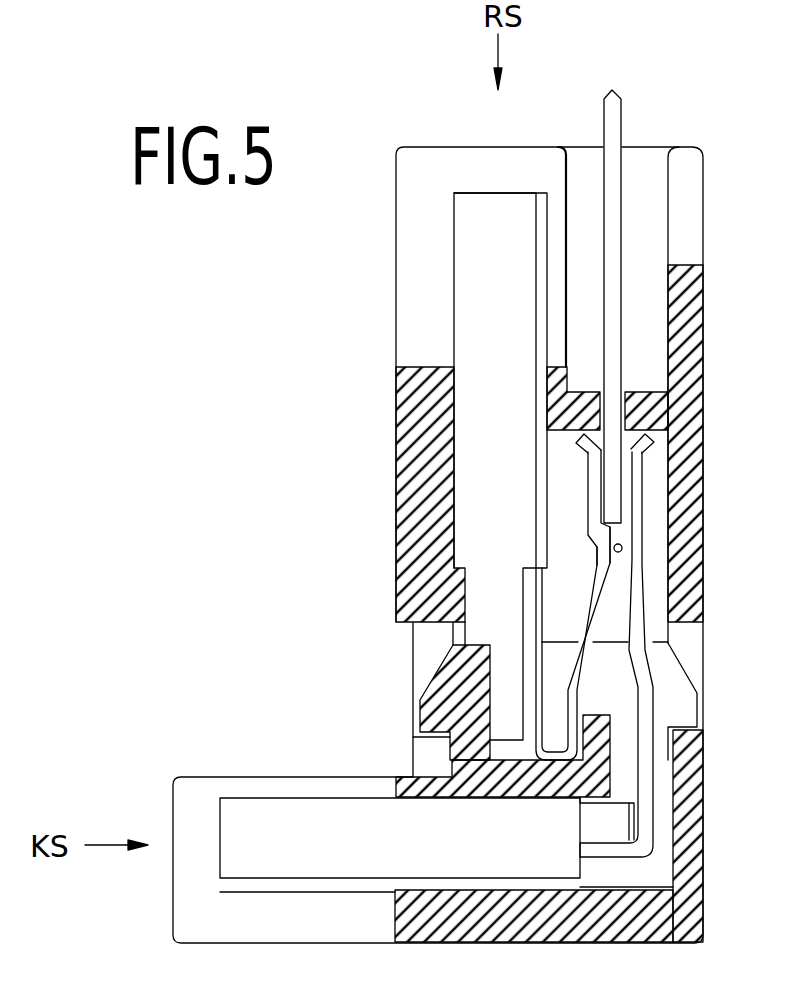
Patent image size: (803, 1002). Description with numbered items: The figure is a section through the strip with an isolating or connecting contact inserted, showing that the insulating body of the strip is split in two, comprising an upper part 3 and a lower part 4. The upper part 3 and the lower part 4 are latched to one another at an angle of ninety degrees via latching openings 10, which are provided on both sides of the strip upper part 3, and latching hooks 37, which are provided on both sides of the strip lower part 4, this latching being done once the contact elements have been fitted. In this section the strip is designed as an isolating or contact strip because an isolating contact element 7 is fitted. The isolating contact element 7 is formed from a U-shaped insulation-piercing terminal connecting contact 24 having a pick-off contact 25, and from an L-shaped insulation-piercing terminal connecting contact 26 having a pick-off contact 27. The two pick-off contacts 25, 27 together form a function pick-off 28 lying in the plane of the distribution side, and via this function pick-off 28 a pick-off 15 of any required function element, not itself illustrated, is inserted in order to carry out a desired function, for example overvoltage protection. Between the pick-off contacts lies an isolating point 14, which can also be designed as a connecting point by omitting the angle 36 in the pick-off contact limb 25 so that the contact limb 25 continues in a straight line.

The upper part 3 is at (395, 565).
The lower part 4 is at (690, 841).
The isolating contact element 7 is at (658, 680).
The latching openings 10 is at (423, 650).
The isolating point 14 is at (622, 547).
The pick-off 15 is at (618, 368).
The U-shaped insulation-piercing terminal connecting contact 24 is at (480, 307).
The pick-off contact 25 is at (584, 457).
The L-shaped insulation-piercing terminal connecting contact 26 is at (325, 830).
The pick-off contact 27 is at (640, 449).
The function pick-off 28 is at (612, 502).
The angle 36 is at (598, 547).
The latching hooks 37 is at (440, 684).